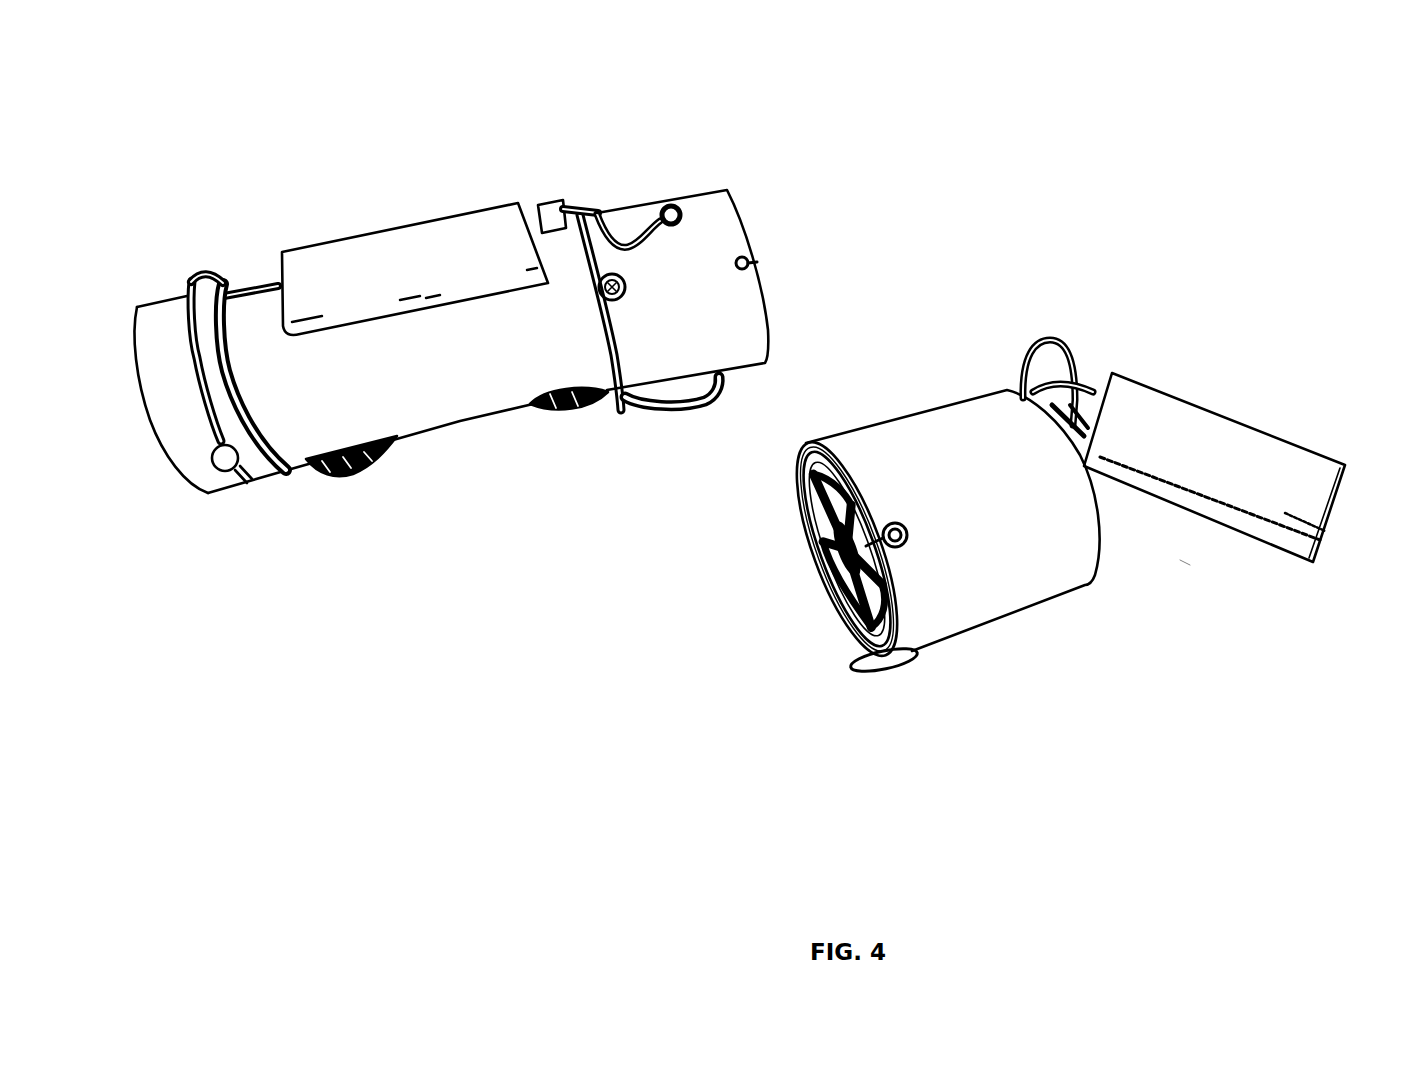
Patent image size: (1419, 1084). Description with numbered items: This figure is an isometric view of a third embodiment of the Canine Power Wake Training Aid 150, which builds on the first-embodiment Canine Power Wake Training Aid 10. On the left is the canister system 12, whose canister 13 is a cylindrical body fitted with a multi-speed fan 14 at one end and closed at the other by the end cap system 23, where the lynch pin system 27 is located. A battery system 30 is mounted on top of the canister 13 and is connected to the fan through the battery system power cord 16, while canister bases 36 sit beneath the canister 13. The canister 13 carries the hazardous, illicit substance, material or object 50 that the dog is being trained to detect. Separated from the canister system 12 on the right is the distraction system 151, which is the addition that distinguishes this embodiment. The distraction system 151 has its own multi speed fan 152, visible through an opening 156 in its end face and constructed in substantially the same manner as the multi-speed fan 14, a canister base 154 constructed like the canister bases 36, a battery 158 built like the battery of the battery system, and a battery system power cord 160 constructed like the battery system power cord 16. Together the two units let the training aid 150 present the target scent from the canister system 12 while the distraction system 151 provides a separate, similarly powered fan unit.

The Canine Power Wake Training Aid 10 is at (792, 144).
The canister system 12 is at (552, 535).
The canister 13 is at (478, 419).
The multi-speed fan 14 is at (752, 305).
The battery system power cord 16 is at (603, 164).
The end cap system 23 is at (263, 480).
The lynch pin system 27 is at (232, 470).
The battery system 30 is at (390, 191).
The canister bases 36 is at (370, 466).
The hazardous, illicit substance, material or object 50 is at (566, 454).
The Canine Power Wake Training Aid 150 is at (1240, 164).
The distraction system 151 is at (1245, 619).
The multi speed fan 152 is at (1023, 600).
The canister base 154 is at (887, 672).
The opening 156 is at (815, 570).
The battery 158 is at (1267, 428).
The battery system power cord 160 is at (1067, 294).